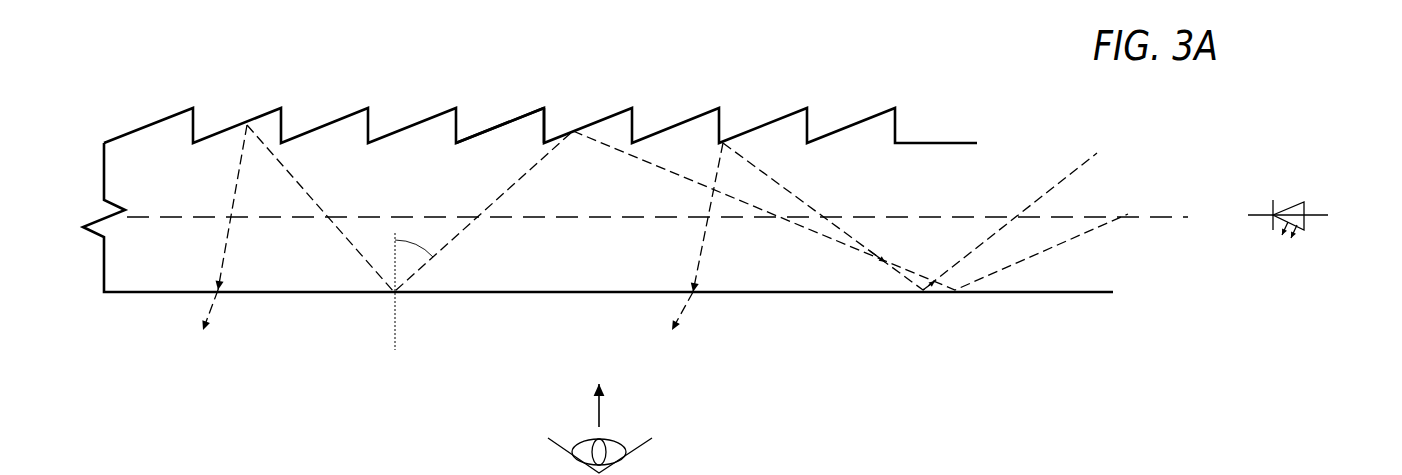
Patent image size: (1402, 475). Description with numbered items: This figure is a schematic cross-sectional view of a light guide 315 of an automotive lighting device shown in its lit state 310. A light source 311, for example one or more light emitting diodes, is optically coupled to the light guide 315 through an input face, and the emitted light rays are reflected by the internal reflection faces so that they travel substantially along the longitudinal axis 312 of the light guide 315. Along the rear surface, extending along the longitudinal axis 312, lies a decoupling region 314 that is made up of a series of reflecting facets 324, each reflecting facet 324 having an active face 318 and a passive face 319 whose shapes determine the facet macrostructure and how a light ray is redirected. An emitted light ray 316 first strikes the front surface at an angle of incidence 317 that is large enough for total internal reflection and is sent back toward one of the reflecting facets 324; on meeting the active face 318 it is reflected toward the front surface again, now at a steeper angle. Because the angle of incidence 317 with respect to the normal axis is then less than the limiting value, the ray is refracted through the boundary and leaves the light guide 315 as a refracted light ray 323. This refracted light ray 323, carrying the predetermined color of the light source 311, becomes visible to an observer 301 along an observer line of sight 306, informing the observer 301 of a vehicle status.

The observer 301 is at (659, 457).
The observer line of sight 306 is at (646, 402).
The lit state 310 is at (1325, 179).
The light source 311 is at (1311, 251).
The longitudinal axis 312 is at (1178, 199).
The decoupling region 314 is at (598, 236).
The light guide 315 is at (132, 39).
The emitted light ray 316 is at (1101, 151).
The angle of incidence 317 is at (416, 266).
The active face 318 is at (507, 123).
The passive face 319 is at (548, 124).
The refracted light ray 323 is at (700, 312).
The reflecting facet 324 is at (548, 66).